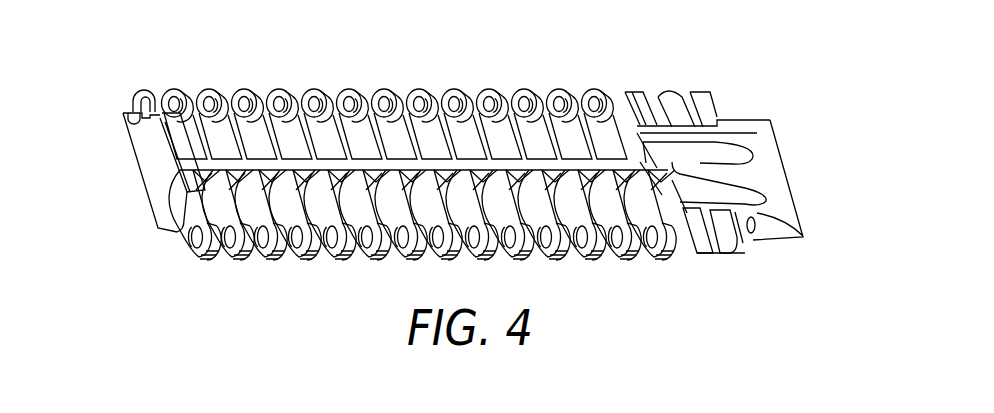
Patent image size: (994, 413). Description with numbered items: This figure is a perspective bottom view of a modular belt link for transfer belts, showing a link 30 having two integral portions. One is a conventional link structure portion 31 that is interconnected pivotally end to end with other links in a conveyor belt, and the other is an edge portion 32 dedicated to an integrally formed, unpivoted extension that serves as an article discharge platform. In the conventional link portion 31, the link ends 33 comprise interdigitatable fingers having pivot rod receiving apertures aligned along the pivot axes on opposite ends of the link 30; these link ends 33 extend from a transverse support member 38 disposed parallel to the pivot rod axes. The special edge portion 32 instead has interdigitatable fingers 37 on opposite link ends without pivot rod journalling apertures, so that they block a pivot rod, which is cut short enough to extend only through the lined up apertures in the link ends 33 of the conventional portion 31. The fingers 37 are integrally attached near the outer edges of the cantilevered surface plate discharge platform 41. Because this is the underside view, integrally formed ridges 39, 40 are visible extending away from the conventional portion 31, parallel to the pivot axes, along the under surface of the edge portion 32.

The link 30 is at (455, 170).
The conventional link structure portion 31 is at (363, 168).
The edge portion 32 is at (742, 157).
The link ends 33 is at (280, 256).
The interdigitatable fingers 37 is at (740, 248).
The transverse support member 38 is at (205, 158).
The ridge 39 is at (728, 152).
The ridge 40 is at (747, 195).
The discharge platform 41 is at (779, 169).